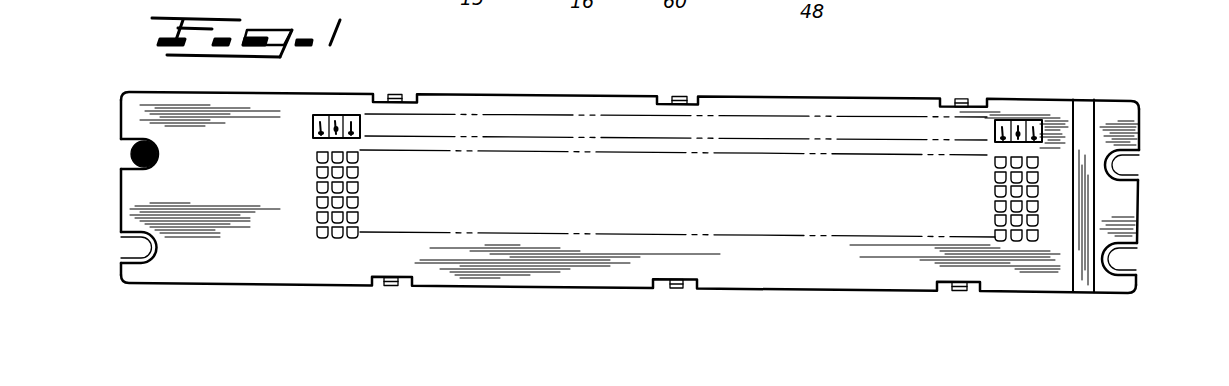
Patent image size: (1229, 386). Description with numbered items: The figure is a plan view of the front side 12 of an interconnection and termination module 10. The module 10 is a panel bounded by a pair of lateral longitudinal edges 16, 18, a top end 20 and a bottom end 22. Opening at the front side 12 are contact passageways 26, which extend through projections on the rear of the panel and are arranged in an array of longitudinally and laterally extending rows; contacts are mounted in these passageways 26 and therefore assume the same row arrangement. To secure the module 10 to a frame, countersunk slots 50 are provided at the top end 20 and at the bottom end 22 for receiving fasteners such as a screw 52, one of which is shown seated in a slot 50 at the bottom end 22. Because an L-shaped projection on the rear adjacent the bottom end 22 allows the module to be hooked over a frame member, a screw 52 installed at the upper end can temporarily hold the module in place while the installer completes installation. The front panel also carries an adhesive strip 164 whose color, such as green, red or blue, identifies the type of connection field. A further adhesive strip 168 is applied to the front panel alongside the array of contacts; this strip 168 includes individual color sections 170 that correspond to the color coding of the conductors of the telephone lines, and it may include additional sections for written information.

The interconnection and termination module 10 is at (1130, 96).
The front side 12 is at (805, 99).
The lateral longitudinal edge 16 is at (562, 96).
The lateral longitudinal edge 18 is at (535, 289).
The top end 20 is at (1138, 203).
The bottom end 22 is at (120, 192).
The contact passageway 26 is at (317, 185).
The countersunk slot 50 is at (125, 160).
The screw 52 is at (128, 152).
The adhesive strip 164 is at (1078, 108).
The adhesive strip 168 is at (337, 115).
The color section 170 is at (322, 114).